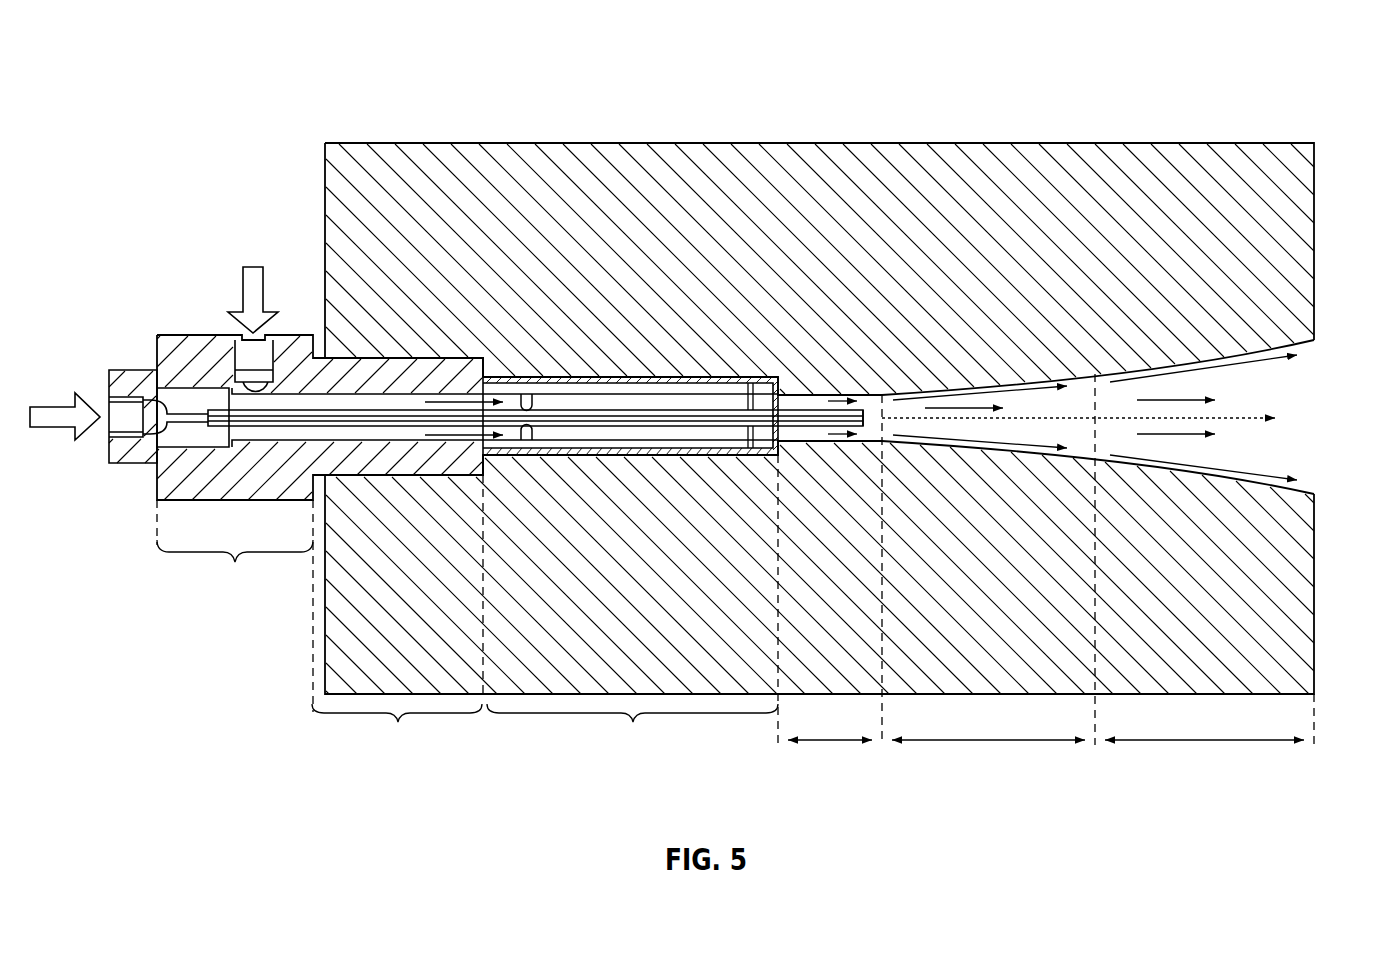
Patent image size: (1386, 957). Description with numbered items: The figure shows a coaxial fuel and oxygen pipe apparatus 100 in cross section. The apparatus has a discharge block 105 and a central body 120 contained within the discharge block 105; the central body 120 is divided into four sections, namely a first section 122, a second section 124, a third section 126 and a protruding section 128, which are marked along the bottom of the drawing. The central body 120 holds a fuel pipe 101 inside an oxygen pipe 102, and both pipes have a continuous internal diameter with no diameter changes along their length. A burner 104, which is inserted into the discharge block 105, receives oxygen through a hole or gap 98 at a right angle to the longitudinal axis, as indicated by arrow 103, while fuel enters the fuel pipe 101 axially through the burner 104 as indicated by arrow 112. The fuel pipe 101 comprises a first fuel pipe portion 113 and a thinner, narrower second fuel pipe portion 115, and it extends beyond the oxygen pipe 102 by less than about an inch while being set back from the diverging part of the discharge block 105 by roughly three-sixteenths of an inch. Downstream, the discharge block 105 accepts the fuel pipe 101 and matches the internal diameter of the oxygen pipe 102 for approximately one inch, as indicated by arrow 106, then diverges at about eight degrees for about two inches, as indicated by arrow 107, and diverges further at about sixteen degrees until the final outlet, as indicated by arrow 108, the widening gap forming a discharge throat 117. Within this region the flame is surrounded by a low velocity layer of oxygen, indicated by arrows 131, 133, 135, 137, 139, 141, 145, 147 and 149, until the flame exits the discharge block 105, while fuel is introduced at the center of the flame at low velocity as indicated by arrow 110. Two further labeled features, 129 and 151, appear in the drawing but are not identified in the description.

The hole or gap 98 is at (239, 348).
The coaxial fuel and oxygen pipe apparatus 100 is at (1033, 91).
The fuel pipe 101 is at (112, 470).
The oxygen pipe 102 is at (171, 331).
The arrow 103 is at (240, 280).
The burner 104 is at (292, 338).
The discharge block 105 is at (406, 141).
The arrow 106 is at (832, 740).
The arrow 107 is at (988, 740).
The arrow 108 is at (1203, 740).
The arrow 110 is at (1270, 413).
The arrow 112 is at (53, 407).
The first fuel pipe portion 113 is at (152, 430).
The second fuel pipe portion 115 is at (358, 430).
The discharge throat 117 is at (1305, 458).
The central body 120 is at (681, 341).
The first section 122 is at (235, 562).
The second section 124 is at (398, 722).
The third section 126 is at (633, 722).
The protruding section 128 is at (838, 417).
The annular oxygen passage 129 is at (475, 403).
The arrow 131 is at (492, 436).
The arrow 133 is at (820, 397).
The arrow 135 is at (823, 437).
The arrow 137 is at (983, 392).
The arrow 139 is at (963, 408).
The arrow 141 is at (965, 442).
The arrow 145 is at (1182, 402).
The arrow 147 is at (1183, 433).
The arrow 149 is at (1208, 370).
The lower boundary flow 151 is at (1205, 467).